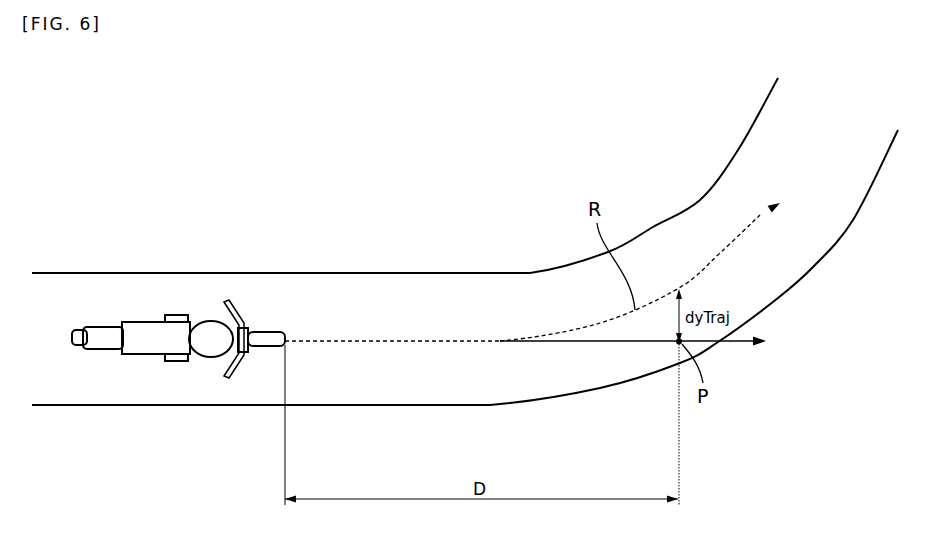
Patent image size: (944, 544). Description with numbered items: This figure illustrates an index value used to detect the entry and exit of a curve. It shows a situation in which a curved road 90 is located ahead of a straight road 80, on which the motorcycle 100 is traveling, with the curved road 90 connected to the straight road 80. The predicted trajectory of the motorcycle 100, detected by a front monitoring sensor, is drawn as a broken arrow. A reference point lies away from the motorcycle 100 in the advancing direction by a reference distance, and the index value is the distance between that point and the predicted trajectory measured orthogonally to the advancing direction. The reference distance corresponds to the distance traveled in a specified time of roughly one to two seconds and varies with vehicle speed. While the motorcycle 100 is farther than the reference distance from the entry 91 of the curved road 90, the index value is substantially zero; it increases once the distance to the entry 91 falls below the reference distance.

The motorcycle 100 is at (218, 357).
The straight road 80 is at (262, 407).
The curved road 90 is at (822, 263).
The entry of the curved road 91 is at (500, 350).